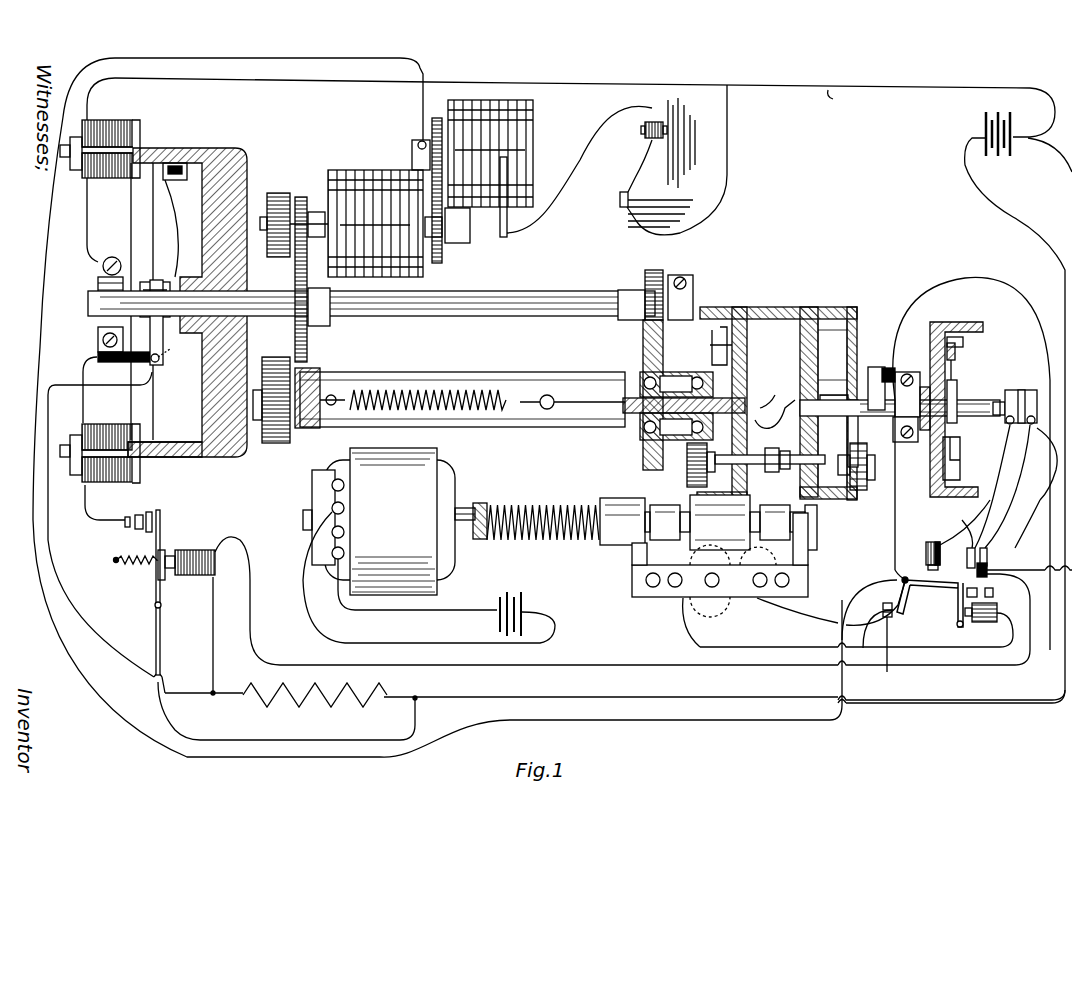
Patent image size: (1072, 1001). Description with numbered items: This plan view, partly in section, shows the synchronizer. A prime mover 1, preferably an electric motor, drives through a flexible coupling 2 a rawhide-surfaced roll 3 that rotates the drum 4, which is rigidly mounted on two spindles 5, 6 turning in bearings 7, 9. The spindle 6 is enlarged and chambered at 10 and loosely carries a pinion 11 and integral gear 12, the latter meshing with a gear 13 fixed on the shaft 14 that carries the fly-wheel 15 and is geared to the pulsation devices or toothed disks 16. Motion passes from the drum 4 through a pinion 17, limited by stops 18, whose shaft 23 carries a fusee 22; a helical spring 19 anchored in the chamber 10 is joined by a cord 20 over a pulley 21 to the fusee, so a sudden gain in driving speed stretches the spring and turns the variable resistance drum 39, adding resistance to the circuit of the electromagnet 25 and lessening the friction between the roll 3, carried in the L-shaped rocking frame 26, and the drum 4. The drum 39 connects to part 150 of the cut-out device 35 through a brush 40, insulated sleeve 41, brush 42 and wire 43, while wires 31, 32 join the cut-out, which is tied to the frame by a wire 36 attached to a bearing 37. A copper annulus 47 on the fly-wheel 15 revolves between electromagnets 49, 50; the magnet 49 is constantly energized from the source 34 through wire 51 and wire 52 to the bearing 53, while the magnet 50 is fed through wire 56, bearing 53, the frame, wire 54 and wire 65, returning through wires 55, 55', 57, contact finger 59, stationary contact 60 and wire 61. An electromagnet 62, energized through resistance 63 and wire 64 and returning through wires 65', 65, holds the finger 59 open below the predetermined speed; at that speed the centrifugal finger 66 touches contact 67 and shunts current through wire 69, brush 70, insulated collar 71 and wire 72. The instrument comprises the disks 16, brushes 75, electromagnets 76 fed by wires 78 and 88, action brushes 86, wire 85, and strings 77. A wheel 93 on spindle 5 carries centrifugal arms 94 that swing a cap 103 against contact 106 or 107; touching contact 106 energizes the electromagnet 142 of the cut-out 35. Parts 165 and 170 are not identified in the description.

The prime mover 1 is at (429, 545).
The flexible coupling 2 is at (552, 545).
The pulley or roll 3 is at (725, 550).
The drum 4 is at (745, 307).
The spindle 5 is at (830, 395).
The spindle 6 is at (640, 448).
The bearing 7 is at (910, 372).
The bearing 9 is at (278, 440).
The chamber 10 is at (515, 427).
The pinion 11 is at (660, 440).
The gear 12 is at (643, 360).
The gear 13 is at (644, 280).
The shaft 14 is at (470, 317).
The fly-wheel 15 is at (215, 457).
The pulsation devices 16 is at (372, 170).
The pinion 17 is at (688, 475).
The stops 18 is at (735, 356).
The helical spring 19 is at (410, 392).
The cord 20 is at (576, 398).
The pulley 21 is at (765, 405).
The fusee 22 is at (775, 470).
The shaft 23 is at (757, 456).
The electromagnet 25 is at (695, 600).
The L-shaped rocking frame 26 is at (640, 575).
The wire 31 is at (695, 643).
The wire 32 is at (808, 622).
The source 34 is at (998, 153).
The cut-out device 35 is at (917, 624).
The wire 36 is at (912, 541).
The bearing 37 is at (868, 470).
The variable resistance drum 39 is at (855, 488).
The brush 40 is at (876, 466).
The insulated sleeve 41 is at (872, 367).
The brush 42 is at (890, 366).
The wire 43 is at (935, 290).
The annulus 47 is at (138, 220).
The electromagnet 49 is at (135, 118).
The electromagnet 50 is at (130, 483).
The wire 51 is at (571, 107).
The wire 52 is at (85, 232).
The bearing 53 is at (97, 284).
The wire 54 is at (40, 320).
The wire 55 is at (1029, 354).
The wire 55' is at (615, 694).
The wire 56 is at (85, 356).
The wire 57 is at (232, 740).
The contact finger 59 is at (162, 528).
The stationary contact 60 is at (130, 532).
The wire 61 is at (83, 515).
The electromagnet 62 is at (190, 550).
The resistance 63 is at (330, 700).
The wire 64 is at (212, 623).
The wire 65 is at (951, 420).
The wire 65' is at (622, 601).
The centrifugal contact finger 66 is at (205, 160).
The contact 67 is at (172, 162).
The wire 69 is at (81, 618).
The brush 70 is at (160, 360).
The insulated collar 71 is at (158, 280).
The wire 72 is at (180, 195).
The brushes 75 is at (493, 216).
The electromagnets 76 is at (641, 132).
The strings 77 is at (686, 143).
The wires 78 is at (572, 163).
The wire 85 is at (727, 143).
The action brushes 86 is at (620, 204).
The wires 88 is at (625, 166).
The wheel 93 is at (960, 322).
The centrifugal arms 94 is at (963, 342).
The cap 103 is at (1022, 390).
The contact 106 is at (1027, 457).
The contact 107 is at (995, 457).
The electromagnet 142 is at (985, 624).
The contact 150 is at (988, 556).
The coil 165 is at (926, 550).
The wire 170 is at (968, 514).